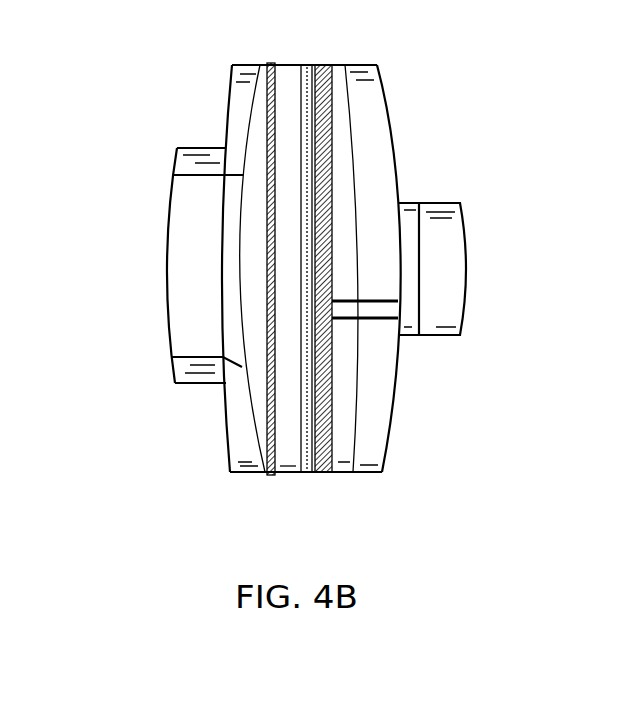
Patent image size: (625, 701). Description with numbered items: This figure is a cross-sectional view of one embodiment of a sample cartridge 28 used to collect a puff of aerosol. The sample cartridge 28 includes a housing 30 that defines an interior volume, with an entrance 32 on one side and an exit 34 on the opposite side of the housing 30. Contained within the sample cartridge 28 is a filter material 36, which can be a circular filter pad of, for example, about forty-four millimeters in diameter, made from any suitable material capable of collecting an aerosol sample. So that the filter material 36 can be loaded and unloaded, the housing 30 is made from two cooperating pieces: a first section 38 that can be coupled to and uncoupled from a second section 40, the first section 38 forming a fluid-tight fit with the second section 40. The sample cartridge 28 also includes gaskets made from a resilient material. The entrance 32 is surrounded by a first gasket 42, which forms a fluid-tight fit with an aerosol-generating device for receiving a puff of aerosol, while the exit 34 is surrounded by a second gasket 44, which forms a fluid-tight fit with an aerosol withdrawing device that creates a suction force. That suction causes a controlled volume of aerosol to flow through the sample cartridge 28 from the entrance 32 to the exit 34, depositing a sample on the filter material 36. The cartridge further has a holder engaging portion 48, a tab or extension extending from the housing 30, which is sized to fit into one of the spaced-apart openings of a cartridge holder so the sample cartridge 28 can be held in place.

The sample cartridge 28 is at (122, 116).
The housing 30 is at (383, 92).
The entrance 32 is at (468, 260).
The exit 34 is at (167, 267).
The filter material 36 is at (333, 462).
The first section 38 is at (388, 432).
The second section 40 is at (227, 430).
The first gasket 42 is at (433, 205).
The second gasket 44 is at (170, 343).
The holder engaging portion 48 is at (450, 338).